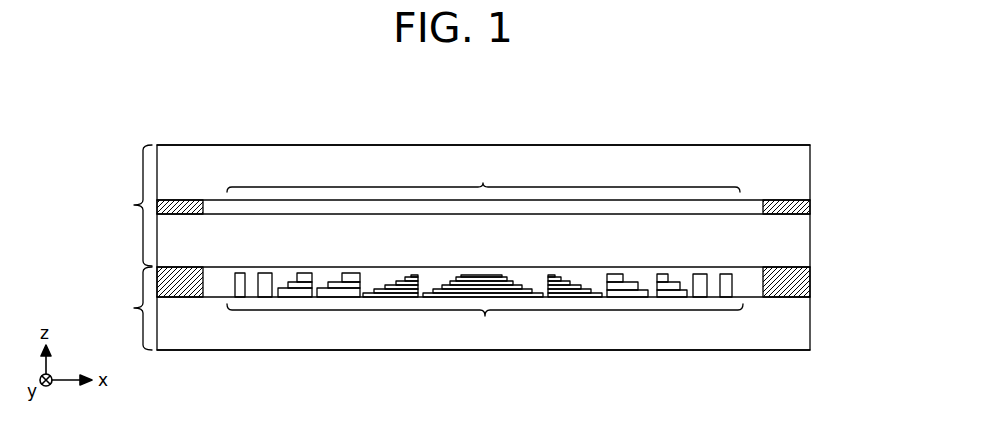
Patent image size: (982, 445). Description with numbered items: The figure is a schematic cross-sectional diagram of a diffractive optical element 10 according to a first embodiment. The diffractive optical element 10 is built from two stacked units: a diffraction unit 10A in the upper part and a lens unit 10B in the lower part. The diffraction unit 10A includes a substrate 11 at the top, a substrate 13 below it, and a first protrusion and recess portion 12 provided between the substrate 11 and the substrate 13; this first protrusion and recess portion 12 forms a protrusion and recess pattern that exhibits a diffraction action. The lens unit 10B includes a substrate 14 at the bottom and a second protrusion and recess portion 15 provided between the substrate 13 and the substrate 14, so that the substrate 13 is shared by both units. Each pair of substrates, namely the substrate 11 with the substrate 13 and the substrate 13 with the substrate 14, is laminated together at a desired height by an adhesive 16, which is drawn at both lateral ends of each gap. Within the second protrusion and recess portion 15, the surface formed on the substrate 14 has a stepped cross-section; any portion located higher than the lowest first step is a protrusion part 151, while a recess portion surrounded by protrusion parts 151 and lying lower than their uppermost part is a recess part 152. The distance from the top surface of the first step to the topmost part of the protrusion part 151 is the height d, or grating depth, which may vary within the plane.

The diffractive optical element 10 is at (83, 145).
The diffraction unit 10A is at (449, 205).
The lens unit 10B is at (449, 308).
The substrate 11 is at (810, 170).
The first protrusion and recess portion 12 is at (483, 173).
The substrate 13 is at (810, 248).
The substrate 14 is at (810, 330).
The second protrusion and recess portion 15 is at (485, 285).
The protrusion part 151 is at (485, 274).
The recess part 152 is at (536, 278).
The adhesive 16 is at (186, 198).